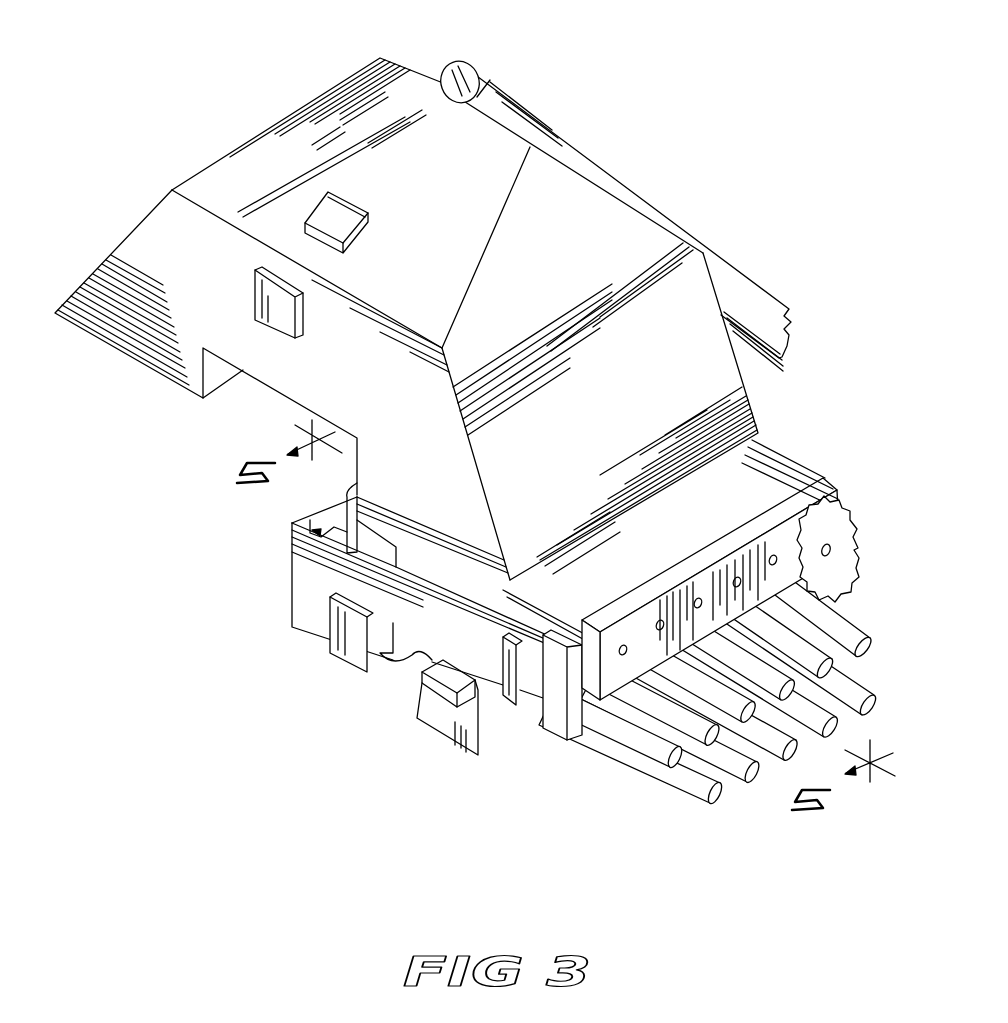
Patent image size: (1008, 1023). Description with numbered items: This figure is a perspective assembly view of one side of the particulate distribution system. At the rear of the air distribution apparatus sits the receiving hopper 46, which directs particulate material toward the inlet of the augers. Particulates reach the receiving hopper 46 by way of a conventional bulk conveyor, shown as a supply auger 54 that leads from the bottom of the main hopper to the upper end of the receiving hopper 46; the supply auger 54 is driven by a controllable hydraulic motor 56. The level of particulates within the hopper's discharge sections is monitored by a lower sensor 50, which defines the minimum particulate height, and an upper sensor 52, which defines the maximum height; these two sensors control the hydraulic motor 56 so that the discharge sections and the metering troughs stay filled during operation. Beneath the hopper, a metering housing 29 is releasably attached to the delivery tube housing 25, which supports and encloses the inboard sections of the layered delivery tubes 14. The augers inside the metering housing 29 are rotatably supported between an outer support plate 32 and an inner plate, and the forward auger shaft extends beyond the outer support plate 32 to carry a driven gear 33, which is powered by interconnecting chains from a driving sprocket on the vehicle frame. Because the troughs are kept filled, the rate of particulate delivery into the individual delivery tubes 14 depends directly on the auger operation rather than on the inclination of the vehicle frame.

The delivery tubes 14 is at (412, 664).
The delivery tube housing 25 is at (306, 638).
The metering housing 29 is at (782, 464).
The outer support plate 32 is at (700, 560).
The driven gear 33 is at (849, 528).
The receiving hopper 46 is at (743, 363).
The lower sensor 50 is at (281, 313).
The upper sensor 52 is at (348, 223).
The supply auger 54 is at (592, 162).
The hydraulic motor 56 is at (452, 66).